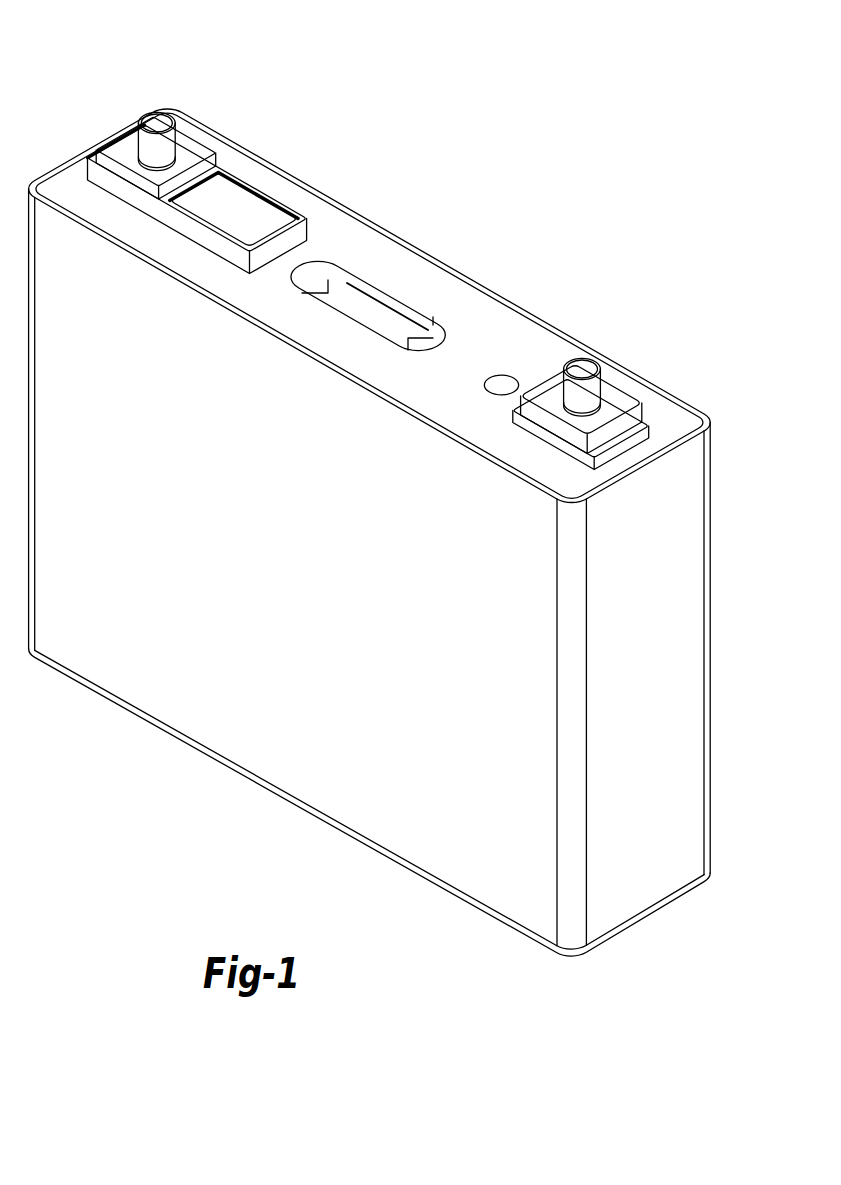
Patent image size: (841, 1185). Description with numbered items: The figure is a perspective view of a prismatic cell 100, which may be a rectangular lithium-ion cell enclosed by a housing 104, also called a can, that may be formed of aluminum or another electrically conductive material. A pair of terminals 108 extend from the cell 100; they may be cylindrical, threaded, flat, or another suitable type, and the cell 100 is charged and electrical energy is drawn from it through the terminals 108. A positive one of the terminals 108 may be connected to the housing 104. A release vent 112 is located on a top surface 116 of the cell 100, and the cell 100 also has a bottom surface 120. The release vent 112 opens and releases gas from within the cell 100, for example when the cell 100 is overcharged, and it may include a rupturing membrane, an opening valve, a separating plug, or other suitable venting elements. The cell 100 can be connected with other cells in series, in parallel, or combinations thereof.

The prismatic cell 100 is at (369, 492).
The housing 104 is at (268, 548).
The terminals 108 is at (157, 122).
The release vent 112 is at (367, 312).
The top surface 116 is at (486, 346).
The bottom surface 120 is at (302, 803).